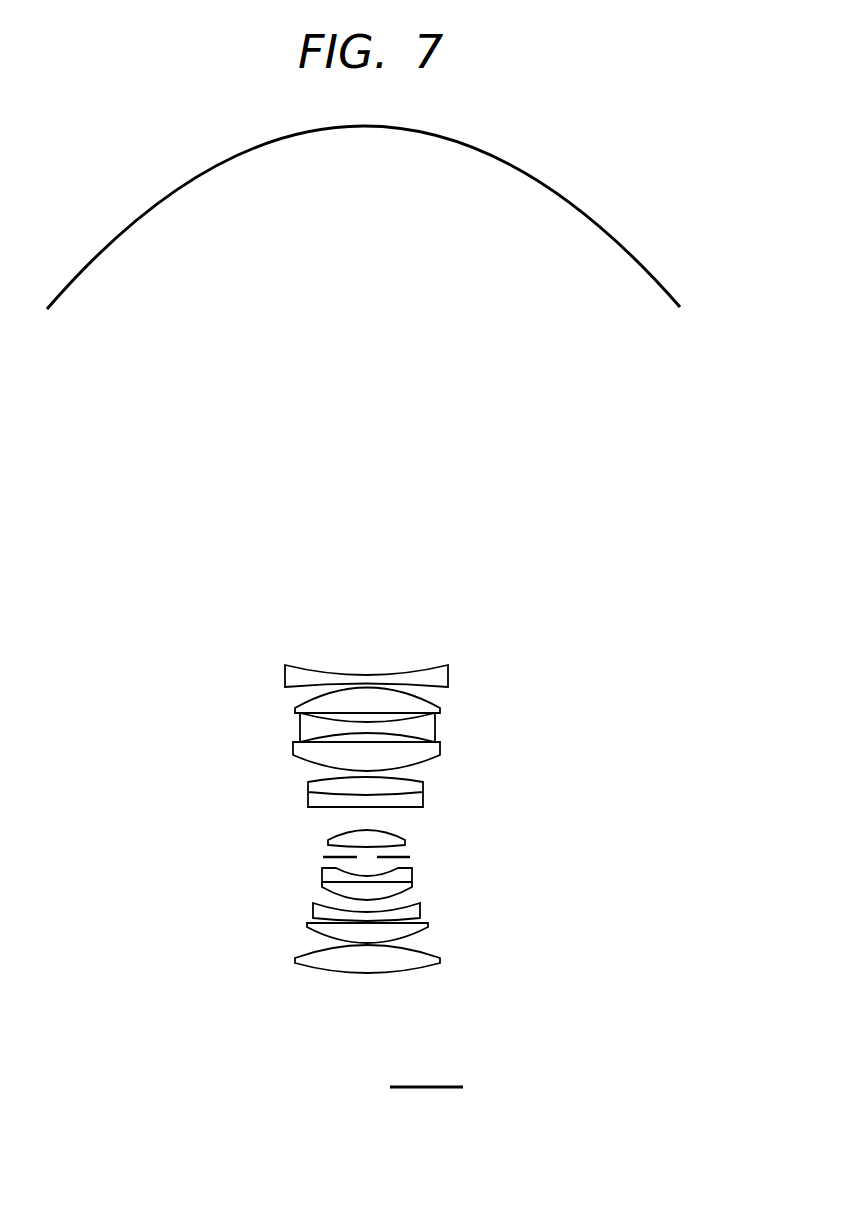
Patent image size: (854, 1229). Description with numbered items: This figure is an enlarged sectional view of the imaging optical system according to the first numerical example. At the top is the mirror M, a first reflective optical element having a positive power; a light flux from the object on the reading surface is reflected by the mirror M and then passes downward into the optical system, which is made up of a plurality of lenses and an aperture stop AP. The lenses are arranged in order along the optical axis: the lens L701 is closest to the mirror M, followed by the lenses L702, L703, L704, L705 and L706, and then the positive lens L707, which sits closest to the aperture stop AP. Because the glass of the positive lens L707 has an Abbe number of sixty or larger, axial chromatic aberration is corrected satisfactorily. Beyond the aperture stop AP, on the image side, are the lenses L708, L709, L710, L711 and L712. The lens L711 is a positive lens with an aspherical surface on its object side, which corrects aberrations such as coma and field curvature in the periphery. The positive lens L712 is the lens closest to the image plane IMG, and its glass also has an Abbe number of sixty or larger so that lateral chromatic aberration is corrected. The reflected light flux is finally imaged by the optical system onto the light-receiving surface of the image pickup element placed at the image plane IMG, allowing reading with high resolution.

The mirror M is at (145, 207).
The lens L701 is at (287, 677).
The lens L702 is at (297, 710).
The lens L703 is at (305, 727).
The lens L704 is at (303, 753).
The lens L705 is at (423, 785).
The lens L706 is at (423, 800).
The positive lens L707 is at (403, 842).
The aperture stop AP is at (403, 858).
The lens L708 is at (322, 875).
The lens L709 is at (322, 888).
The lens L710 is at (318, 913).
The lens L711 is at (315, 930).
The positive lens L712 is at (312, 967).
The image plane IMG is at (443, 1087).